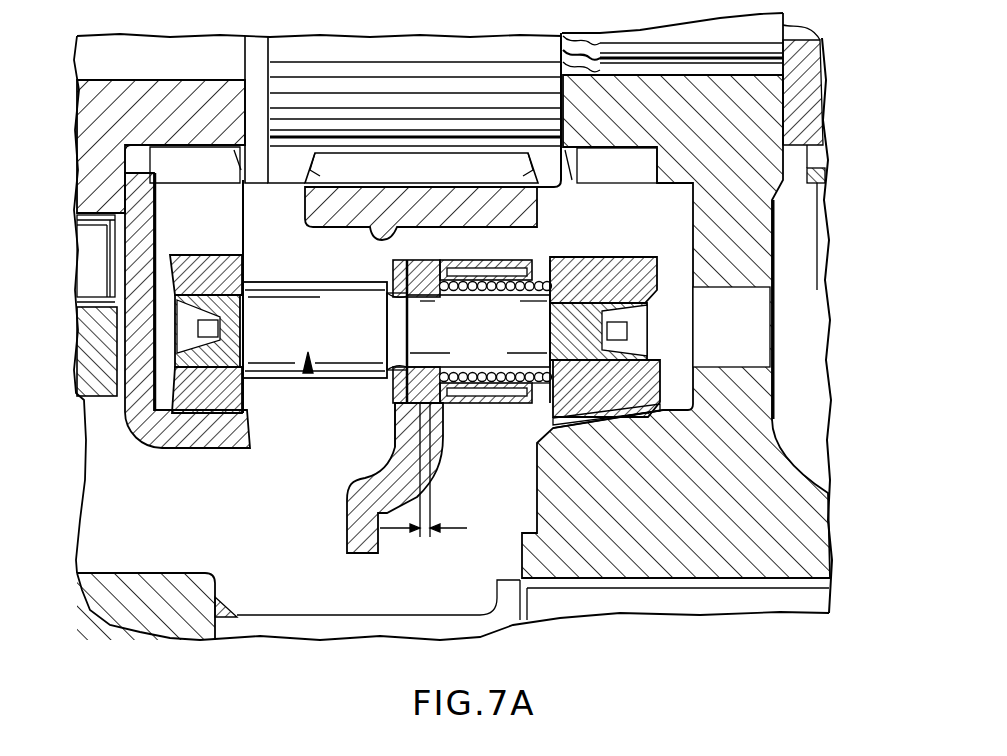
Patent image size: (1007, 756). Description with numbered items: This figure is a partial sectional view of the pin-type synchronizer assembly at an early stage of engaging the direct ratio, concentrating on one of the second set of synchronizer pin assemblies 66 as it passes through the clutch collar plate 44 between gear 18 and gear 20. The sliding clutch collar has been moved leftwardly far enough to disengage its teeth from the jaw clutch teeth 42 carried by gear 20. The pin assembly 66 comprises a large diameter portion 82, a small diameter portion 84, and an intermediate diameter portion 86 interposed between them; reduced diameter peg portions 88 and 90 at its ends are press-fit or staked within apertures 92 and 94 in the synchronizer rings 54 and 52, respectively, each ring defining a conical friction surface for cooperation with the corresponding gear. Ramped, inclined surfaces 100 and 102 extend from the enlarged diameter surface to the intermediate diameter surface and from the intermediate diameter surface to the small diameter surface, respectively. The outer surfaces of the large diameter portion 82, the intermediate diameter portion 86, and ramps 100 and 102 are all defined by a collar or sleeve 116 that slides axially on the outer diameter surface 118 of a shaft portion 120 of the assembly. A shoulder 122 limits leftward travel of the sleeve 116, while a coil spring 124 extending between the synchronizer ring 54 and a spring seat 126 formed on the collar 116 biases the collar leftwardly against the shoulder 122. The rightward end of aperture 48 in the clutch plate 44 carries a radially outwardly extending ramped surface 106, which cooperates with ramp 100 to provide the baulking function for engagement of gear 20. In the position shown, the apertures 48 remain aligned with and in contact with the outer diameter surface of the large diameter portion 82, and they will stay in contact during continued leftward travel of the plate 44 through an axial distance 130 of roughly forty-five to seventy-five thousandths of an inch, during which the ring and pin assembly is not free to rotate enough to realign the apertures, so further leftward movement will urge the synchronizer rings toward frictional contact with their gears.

The gear 18 is at (161, 146).
The gear 20 is at (676, 301).
The jaw clutch teeth 42 is at (611, 165).
The clutch collar plate 44 is at (463, 483).
The apertures 48 is at (393, 265).
The synchronizer ring 52 is at (214, 398).
The synchronizer ring 54 is at (647, 402).
The synchronizer pin assembly 66 is at (306, 373).
The large diameter portion 82 is at (468, 256).
The small diameter portion 84 is at (293, 282).
The intermediate diameter portion 86 is at (400, 410).
The reduced diameter peg portion 88 is at (610, 275).
The reduced diameter peg portion 90 is at (208, 297).
The aperture 92 is at (600, 415).
The aperture 94 is at (240, 336).
The ramped surface 100 is at (443, 296).
The ramped surface 102 is at (400, 296).
The ramped surface 106 is at (441, 250).
The collar 116 is at (497, 403).
The outer diameter surface 118 is at (537, 283).
The shaft portion 120 is at (515, 280).
The shoulder 122 is at (384, 288).
The coil spring 124 is at (543, 400).
The spring seat 126 is at (457, 376).
The axial distance 130 is at (423, 535).